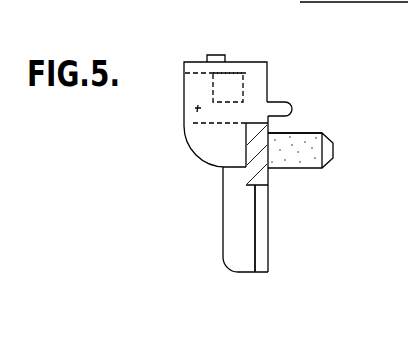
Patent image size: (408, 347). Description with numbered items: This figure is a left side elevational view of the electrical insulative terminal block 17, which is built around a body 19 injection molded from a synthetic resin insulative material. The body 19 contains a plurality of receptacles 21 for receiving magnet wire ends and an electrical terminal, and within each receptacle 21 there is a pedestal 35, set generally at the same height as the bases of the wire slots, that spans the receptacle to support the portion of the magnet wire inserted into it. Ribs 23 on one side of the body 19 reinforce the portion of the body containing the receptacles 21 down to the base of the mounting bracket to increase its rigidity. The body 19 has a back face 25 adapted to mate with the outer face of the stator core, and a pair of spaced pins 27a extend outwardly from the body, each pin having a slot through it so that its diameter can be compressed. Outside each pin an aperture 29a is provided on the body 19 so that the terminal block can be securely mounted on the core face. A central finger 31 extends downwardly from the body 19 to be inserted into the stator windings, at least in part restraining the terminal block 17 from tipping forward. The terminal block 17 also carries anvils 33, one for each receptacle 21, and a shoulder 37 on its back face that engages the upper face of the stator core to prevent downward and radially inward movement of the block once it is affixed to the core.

The electrical insulative terminal block 17 is at (318, 69).
The body 19 is at (268, 79).
The receptacle 21 is at (186, 93).
The rib 23 is at (218, 147).
The back face 25 is at (279, 151).
The pin 27a is at (297, 167).
The aperture 29a is at (244, 181).
The central finger 31 is at (220, 250).
The anvil 33 is at (214, 55).
The pedestal 35 is at (228, 84).
The shoulder 37 is at (284, 102).